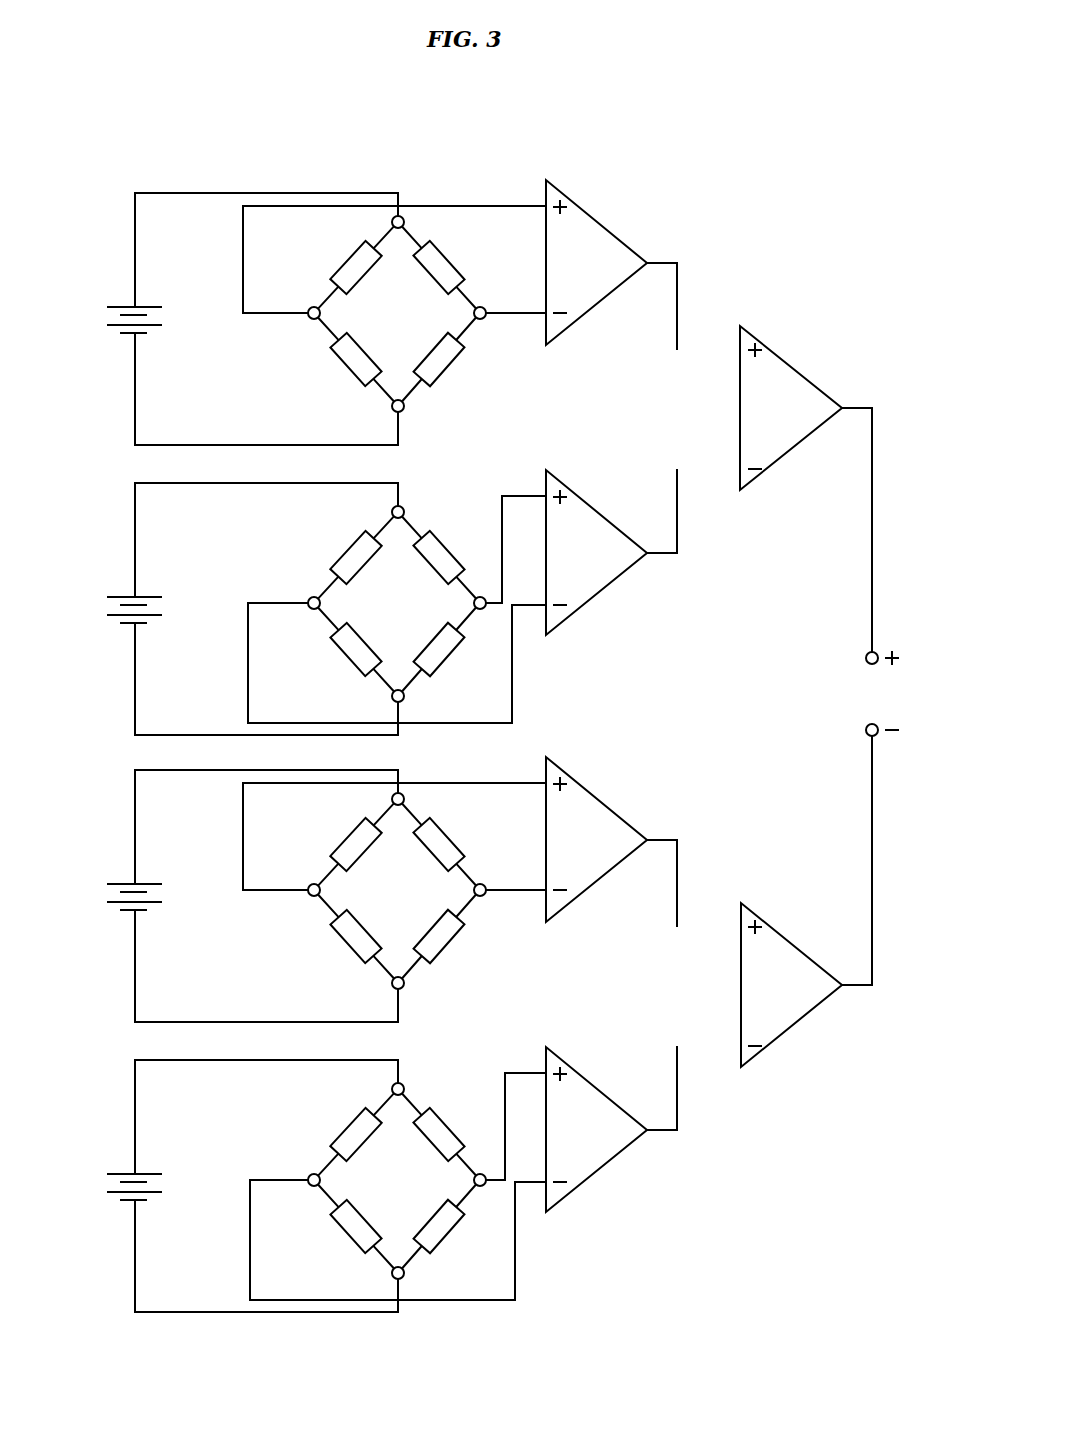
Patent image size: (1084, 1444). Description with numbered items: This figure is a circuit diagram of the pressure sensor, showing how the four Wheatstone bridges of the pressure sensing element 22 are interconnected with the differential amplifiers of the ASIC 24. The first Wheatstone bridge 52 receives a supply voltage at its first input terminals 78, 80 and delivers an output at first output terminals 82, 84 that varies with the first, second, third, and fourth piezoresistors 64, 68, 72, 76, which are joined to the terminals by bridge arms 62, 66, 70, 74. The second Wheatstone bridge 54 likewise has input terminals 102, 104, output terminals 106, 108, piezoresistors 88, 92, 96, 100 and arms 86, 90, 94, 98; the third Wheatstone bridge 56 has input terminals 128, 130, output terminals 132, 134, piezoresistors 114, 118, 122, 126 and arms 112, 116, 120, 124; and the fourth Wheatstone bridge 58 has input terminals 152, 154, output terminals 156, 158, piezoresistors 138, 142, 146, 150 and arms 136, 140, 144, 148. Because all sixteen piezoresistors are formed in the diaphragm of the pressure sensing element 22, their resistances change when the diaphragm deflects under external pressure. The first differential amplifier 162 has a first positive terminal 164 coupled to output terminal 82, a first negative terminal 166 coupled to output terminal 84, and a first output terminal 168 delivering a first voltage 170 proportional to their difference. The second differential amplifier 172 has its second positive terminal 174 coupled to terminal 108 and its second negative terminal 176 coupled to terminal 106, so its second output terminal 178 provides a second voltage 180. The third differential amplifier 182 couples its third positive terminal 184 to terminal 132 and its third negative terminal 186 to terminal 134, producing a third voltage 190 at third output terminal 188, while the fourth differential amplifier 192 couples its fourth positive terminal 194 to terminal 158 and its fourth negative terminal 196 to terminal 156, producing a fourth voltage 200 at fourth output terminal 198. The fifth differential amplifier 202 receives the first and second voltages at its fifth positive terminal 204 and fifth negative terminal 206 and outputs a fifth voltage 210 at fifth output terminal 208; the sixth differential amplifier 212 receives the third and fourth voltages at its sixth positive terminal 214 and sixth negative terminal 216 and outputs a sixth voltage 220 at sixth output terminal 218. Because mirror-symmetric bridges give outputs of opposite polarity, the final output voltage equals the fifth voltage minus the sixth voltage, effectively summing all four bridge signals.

The pressure sensing element 22 is at (222, 149).
The ASIC 24 is at (772, 159).
The first Wheatstone bridge 52 is at (228, 216).
The second Wheatstone bridge 54 is at (243, 609).
The third Wheatstone bridge 56 is at (243, 896).
The fourth Wheatstone bridge 58 is at (243, 1186).
The bridge arm conductor 62 is at (325, 267).
The first piezoresistor 64 is at (332, 251).
The bridge arm conductor 66 is at (447, 260).
The second piezoresistor 68 is at (469, 261).
The bridge arm conductor 70 is at (439, 377).
The third piezoresistor 72 is at (467, 365).
The bridge arm conductor 74 is at (317, 360).
The fourth piezoresistor 76 is at (324, 373).
The first input terminal 78 is at (416, 188).
The first input terminal 80 is at (349, 420).
The first positive output terminal 82 is at (267, 333).
The first negative output terminal 84 is at (500, 332).
The bridge arm conductor 86 is at (326, 557).
The first piezoresistor 88 is at (334, 541).
The bridge arm conductor 90 is at (442, 540).
The second piezoresistor 92 is at (456, 549).
The bridge arm conductor 94 is at (440, 662).
The third piezoresistor 96 is at (459, 655).
The bridge arm conductor 98 is at (330, 650).
The fourth piezoresistor 100 is at (324, 660).
The first input terminal 102 is at (423, 478).
The first input terminal 104 is at (346, 705).
The second positive output terminal 106 is at (263, 583).
The second negative output terminal 108 is at (442, 613).
The bridge arm conductor 112 is at (325, 844).
The first piezoresistor 114 is at (330, 828).
The bridge arm conductor 116 is at (455, 835).
The second piezoresistor 118 is at (476, 841).
The bridge arm conductor 120 is at (447, 954).
The third piezoresistor 122 is at (473, 940).
The bridge arm conductor 124 is at (314, 937).
The fourth piezoresistor 126 is at (321, 950).
The first input terminal 128 is at (423, 765).
The first input terminal 130 is at (347, 994).
The third positive output terminal 132 is at (263, 909).
The third negative output terminal 134 is at (503, 903).
The bridge arm conductor 136 is at (322, 1134).
The first piezoresistor 138 is at (327, 1119).
The bridge arm conductor 140 is at (448, 1120).
The second piezoresistor 142 is at (475, 1132).
The bridge arm conductor 144 is at (447, 1244).
The third piezoresistor 146 is at (464, 1230).
The bridge arm conductor 148 is at (324, 1227).
The fourth piezoresistor 150 is at (321, 1240).
The first input terminal 152 is at (423, 1054).
The first input terminal 154 is at (347, 1283).
The fourth positive output terminal 156 is at (262, 1159).
The fourth negative output terminal 158 is at (442, 1185).
The first differential amplifier 162 is at (614, 262).
The first positive terminal 164 is at (407, 213).
The first negative terminal 166 is at (533, 338).
The first output terminal 168 is at (631, 306).
The first voltage 170 is at (699, 232).
The second differential amplifier 172 is at (605, 552).
The second positive terminal 174 is at (529, 509).
The second negative terminal 176 is at (413, 650).
The second output terminal 178 is at (632, 552).
The second voltage 180 is at (700, 593).
The third differential amplifier 182 is at (613, 839).
The third positive terminal 184 is at (407, 800).
The third negative terminal 186 is at (531, 912).
The third output terminal 188 is at (632, 883).
The third voltage 190 is at (701, 808).
The fourth differential amplifier 192 is at (605, 1128).
The fourth positive terminal 194 is at (529, 1093).
The fourth negative terminal 196 is at (414, 1223).
The fourth output terminal 198 is at (632, 1127).
The fourth voltage 200 is at (701, 1170).
The fifth differential amplifier 202 is at (776, 355).
The fifth positive terminal 204 is at (740, 338).
The fifth negative terminal 206 is at (740, 472).
The fifth output terminal 208 is at (843, 410).
The fifth voltage 210 is at (860, 380).
The sixth differential amplifier 212 is at (776, 932).
The sixth positive terminal 214 is at (741, 915).
The sixth negative terminal 216 is at (741, 1050).
The sixth output terminal 218 is at (843, 988).
The sixth voltage 220 is at (860, 1022).